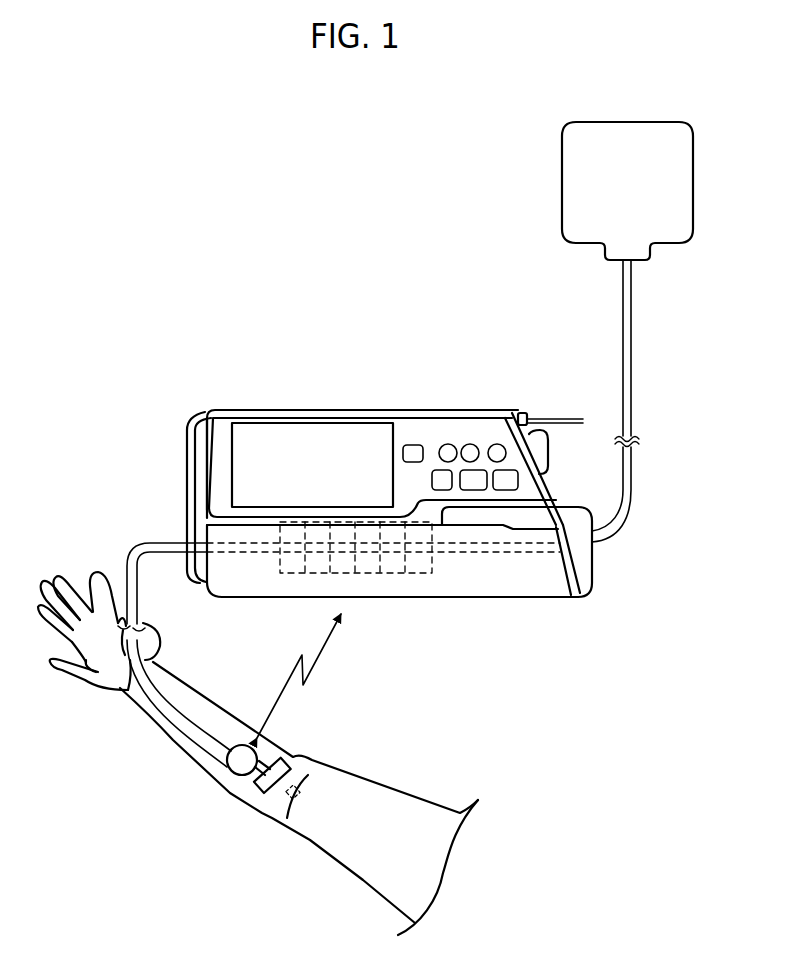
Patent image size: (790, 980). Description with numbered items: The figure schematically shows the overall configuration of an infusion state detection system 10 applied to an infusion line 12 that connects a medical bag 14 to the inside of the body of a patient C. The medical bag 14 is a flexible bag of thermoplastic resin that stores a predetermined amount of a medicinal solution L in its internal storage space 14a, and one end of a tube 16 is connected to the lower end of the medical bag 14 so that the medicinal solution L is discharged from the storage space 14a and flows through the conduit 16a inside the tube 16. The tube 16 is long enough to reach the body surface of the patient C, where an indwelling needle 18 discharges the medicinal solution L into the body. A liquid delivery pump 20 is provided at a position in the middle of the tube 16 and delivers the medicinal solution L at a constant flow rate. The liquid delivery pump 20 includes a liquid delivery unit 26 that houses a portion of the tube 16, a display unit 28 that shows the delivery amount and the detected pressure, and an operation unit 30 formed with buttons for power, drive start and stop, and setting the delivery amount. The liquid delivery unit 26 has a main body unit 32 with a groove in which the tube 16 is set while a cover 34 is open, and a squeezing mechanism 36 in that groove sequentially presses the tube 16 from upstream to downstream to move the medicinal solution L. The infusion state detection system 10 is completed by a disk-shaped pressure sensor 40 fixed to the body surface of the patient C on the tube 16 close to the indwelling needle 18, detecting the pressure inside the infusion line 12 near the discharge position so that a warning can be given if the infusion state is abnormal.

The infusion state detection system 10 is at (235, 146).
The infusion line 12 is at (520, 334).
The medical bag 14 is at (620, 122).
The storage space 14a is at (585, 181).
The medicinal solution L is at (668, 209).
The tube 16 is at (634, 331).
The conduit 16a is at (634, 472).
The indwelling needle 18 is at (312, 791).
The liquid delivery pump 20 is at (304, 390).
The liquid delivery unit 26 is at (516, 598).
The display unit 28 is at (258, 435).
The operation unit 30 is at (471, 432).
The main body unit 32 is at (222, 507).
The cover 34 is at (478, 582).
The squeezing mechanism 36 is at (291, 578).
The pressure sensor 40 is at (233, 777).
The patient C is at (415, 789).